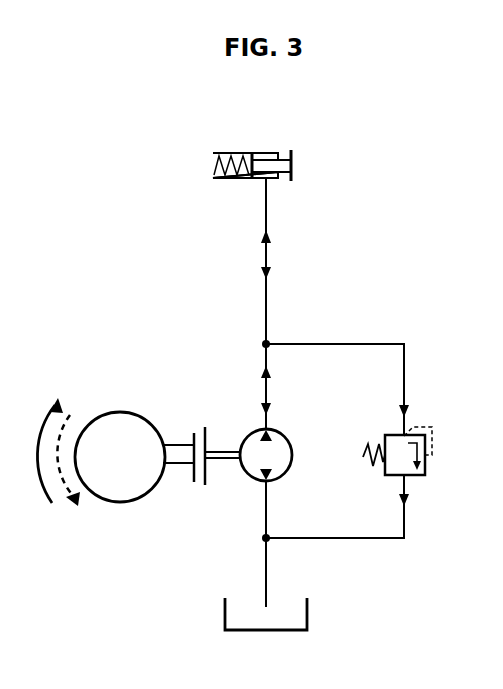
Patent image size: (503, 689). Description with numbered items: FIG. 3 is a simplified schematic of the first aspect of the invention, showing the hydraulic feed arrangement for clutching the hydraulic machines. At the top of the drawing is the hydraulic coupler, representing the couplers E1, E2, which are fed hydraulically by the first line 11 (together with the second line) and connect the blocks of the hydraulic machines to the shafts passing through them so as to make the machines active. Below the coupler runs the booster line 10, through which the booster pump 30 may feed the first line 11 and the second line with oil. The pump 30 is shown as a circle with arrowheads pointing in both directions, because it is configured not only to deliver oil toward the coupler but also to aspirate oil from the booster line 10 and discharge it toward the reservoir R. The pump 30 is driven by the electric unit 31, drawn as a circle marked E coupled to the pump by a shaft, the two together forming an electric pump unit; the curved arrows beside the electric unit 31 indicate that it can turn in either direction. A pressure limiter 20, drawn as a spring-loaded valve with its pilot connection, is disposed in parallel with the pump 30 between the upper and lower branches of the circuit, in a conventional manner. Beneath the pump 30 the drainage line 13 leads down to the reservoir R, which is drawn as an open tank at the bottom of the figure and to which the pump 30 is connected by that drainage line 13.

The booster line 10 is at (266, 305).
The first line 11 is at (266, 208).
The drainage line 13 is at (266, 578).
The pressure limiter 20 is at (432, 468).
The booster pump 30 is at (285, 427).
The electric unit 31 is at (152, 409).
The coupler E1 is at (266, 146).
The coupler E2 is at (245, 165).
The reservoir R is at (315, 615).